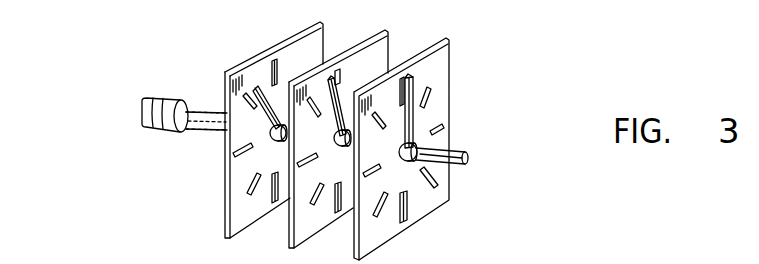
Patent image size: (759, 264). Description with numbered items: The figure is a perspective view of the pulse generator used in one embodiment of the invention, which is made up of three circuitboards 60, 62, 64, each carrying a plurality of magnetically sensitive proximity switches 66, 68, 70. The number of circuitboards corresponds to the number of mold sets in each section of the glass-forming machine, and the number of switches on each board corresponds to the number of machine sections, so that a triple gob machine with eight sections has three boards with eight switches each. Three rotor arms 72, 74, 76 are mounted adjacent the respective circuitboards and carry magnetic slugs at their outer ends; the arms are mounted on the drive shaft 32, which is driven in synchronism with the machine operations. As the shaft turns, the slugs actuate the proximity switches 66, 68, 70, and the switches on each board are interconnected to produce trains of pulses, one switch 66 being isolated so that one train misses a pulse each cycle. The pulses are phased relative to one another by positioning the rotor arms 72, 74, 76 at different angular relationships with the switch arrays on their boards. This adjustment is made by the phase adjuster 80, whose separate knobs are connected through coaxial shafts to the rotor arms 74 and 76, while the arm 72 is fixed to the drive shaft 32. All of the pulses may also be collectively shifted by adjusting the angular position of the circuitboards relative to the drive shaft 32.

The drive shaft 32 is at (462, 149).
The circuitboard 60 is at (450, 58).
The circuitboard 62 is at (388, 46).
The circuitboard 64 is at (322, 33).
The proximity switch 66 is at (430, 96).
The proximity switch 68 is at (336, 79).
The proximity switch 70 is at (278, 70).
The rotor arm 72 is at (401, 134).
The rotor arm 74 is at (334, 140).
The rotor arm 76 is at (269, 128).
The phase adjuster 80 is at (128, 100).